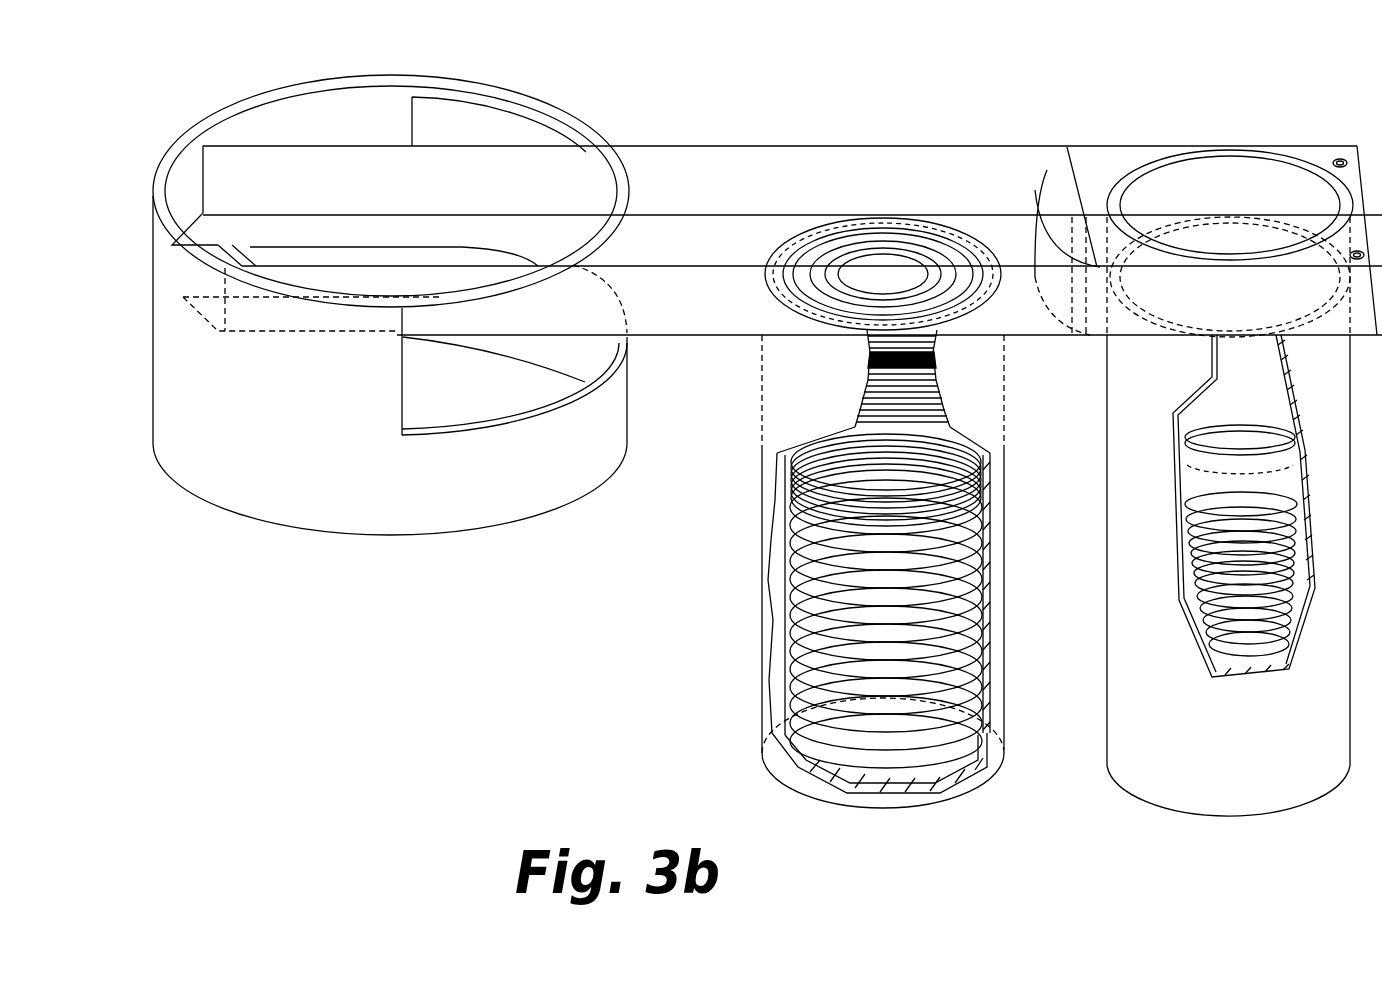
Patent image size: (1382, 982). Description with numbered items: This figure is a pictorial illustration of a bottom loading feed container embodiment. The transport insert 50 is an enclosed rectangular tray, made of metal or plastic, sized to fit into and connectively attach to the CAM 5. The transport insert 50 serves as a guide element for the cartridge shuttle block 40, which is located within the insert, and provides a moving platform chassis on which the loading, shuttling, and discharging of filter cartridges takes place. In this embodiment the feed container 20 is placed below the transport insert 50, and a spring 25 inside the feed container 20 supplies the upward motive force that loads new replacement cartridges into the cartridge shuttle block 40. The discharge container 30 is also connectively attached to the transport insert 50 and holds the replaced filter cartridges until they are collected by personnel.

The CAM 5 is at (287, 395).
The feed container 20 is at (822, 407).
The spring 25 is at (785, 627).
The discharge container 30 is at (1258, 774).
The cartridge shuttle block 40 is at (1045, 170).
The transport insert 50 is at (695, 313).